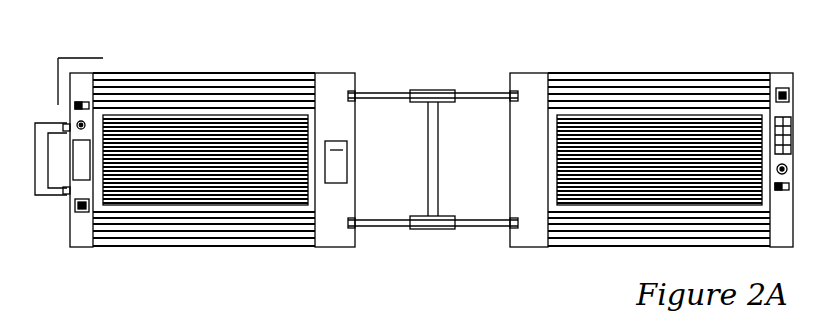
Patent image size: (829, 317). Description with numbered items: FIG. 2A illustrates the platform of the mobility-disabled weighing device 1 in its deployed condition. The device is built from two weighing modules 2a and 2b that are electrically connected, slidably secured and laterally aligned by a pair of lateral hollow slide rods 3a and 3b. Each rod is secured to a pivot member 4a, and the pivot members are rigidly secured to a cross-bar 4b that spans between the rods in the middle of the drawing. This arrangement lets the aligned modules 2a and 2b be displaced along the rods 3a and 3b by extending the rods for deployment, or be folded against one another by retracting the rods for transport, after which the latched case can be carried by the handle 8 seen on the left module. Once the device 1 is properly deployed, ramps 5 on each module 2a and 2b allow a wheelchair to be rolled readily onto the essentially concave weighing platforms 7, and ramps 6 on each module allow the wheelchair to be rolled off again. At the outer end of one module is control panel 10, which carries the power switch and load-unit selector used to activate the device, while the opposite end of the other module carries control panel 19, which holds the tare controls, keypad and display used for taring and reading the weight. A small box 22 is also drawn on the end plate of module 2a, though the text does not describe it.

The mobility-disabled weighing device 1 is at (58, 58).
The weighing module 2a is at (335, 82).
The weighing module 2b is at (533, 80).
The lateral hollow slide rod 3a is at (383, 91).
The lateral hollow slide rod 3b is at (478, 91).
The pivot member 4a is at (435, 232).
The cross-bar 4b is at (433, 157).
The ramp 5 is at (262, 228).
The ramp 6 is at (264, 93).
The weighing platform 7 is at (168, 150).
The handle 8 is at (43, 195).
The control panel 10 is at (82, 235).
The control panel 19 is at (783, 82).
The connector box 22 is at (336, 178).